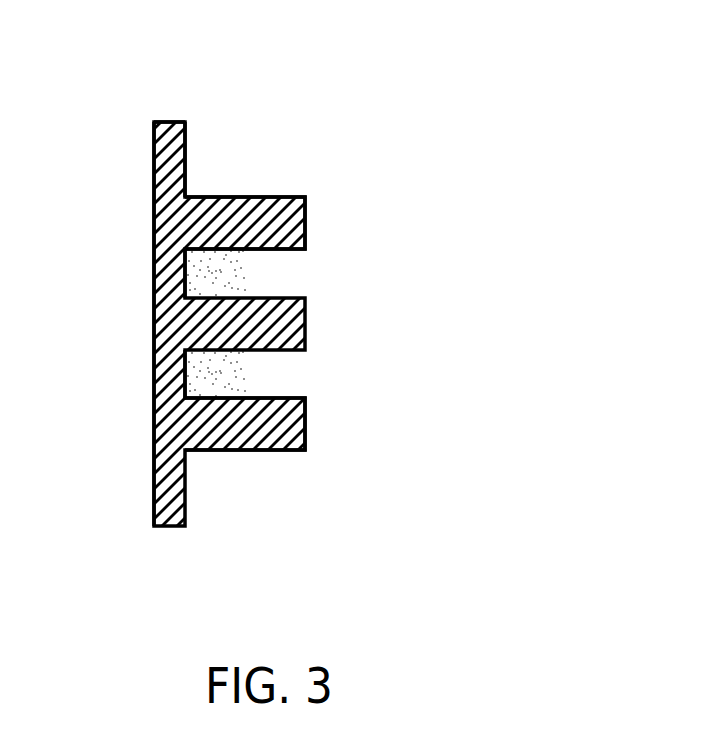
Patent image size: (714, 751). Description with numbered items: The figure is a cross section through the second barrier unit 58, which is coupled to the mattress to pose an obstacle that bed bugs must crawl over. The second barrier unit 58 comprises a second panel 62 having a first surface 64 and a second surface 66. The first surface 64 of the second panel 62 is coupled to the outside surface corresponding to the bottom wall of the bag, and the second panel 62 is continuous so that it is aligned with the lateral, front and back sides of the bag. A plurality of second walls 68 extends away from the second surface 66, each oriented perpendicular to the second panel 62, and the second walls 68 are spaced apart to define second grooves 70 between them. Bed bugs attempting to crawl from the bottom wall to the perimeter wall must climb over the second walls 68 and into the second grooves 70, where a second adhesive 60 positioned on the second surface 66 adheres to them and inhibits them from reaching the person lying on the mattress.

The second barrier unit 58 is at (189, 98).
The second adhesive 60 is at (245, 282).
The second panel 62 is at (157, 124).
The first surface 64 is at (153, 230).
The second surface 66 is at (186, 168).
The second walls 68 is at (290, 197).
The second grooves 70 is at (302, 265).